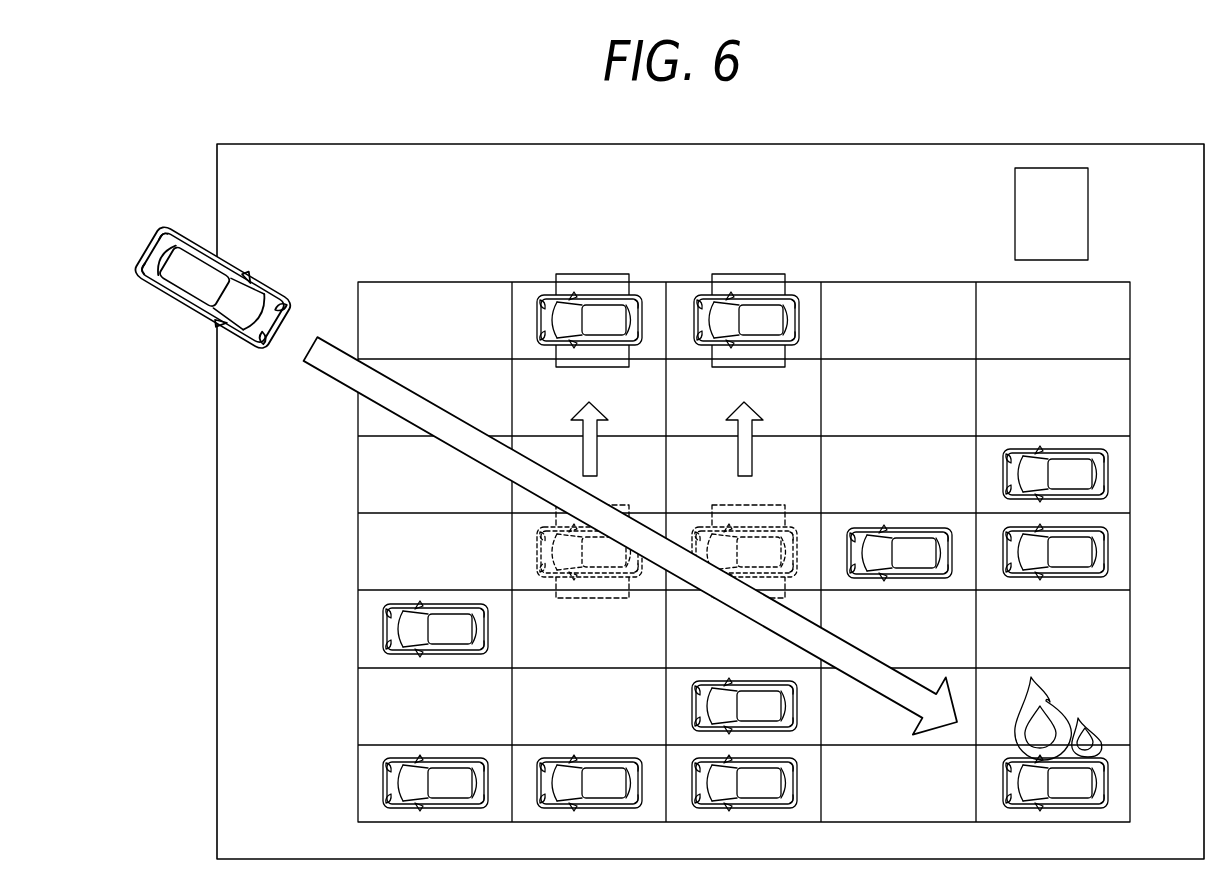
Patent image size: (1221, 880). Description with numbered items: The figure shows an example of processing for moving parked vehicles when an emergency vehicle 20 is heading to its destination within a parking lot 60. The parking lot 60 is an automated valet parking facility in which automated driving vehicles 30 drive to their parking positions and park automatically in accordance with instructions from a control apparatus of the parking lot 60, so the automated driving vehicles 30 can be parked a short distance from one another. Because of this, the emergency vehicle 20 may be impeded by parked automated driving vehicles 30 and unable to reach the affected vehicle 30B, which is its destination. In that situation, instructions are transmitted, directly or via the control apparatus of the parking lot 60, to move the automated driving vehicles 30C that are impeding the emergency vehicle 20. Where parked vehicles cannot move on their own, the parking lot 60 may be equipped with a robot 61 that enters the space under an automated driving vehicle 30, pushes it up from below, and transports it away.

The emergency vehicle 20 is at (237, 258).
The automated driving vehicle 30 is at (897, 528).
The affected vehicle 30B is at (1107, 781).
The automated driving vehicles impeding the emergency vehicle 30C is at (703, 295).
The parking lot 60 is at (877, 143).
The robot 61 is at (1090, 212).